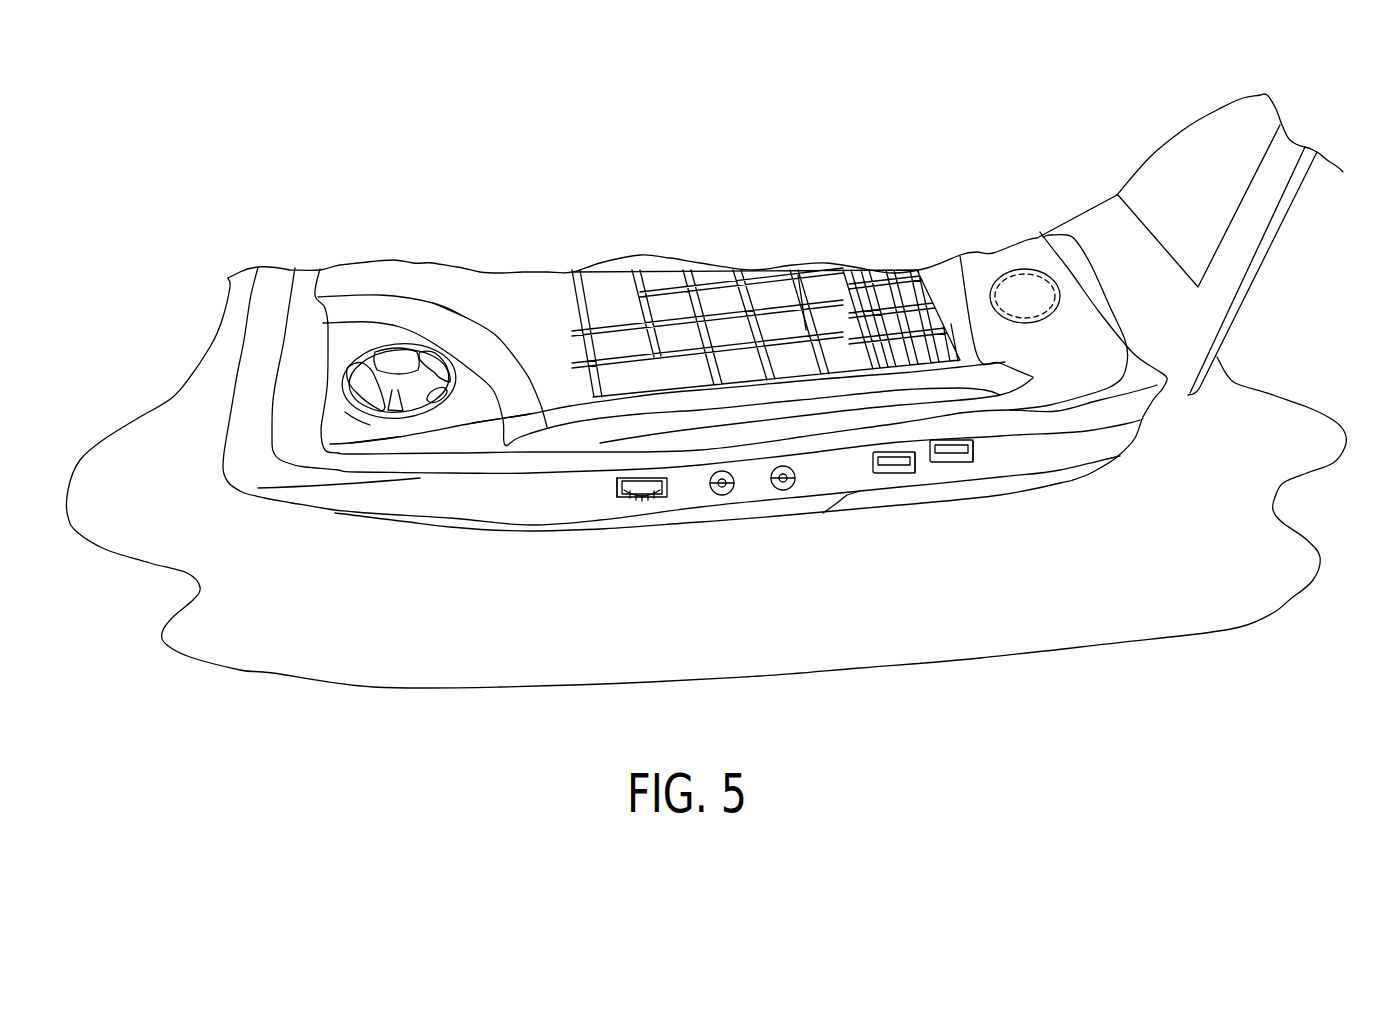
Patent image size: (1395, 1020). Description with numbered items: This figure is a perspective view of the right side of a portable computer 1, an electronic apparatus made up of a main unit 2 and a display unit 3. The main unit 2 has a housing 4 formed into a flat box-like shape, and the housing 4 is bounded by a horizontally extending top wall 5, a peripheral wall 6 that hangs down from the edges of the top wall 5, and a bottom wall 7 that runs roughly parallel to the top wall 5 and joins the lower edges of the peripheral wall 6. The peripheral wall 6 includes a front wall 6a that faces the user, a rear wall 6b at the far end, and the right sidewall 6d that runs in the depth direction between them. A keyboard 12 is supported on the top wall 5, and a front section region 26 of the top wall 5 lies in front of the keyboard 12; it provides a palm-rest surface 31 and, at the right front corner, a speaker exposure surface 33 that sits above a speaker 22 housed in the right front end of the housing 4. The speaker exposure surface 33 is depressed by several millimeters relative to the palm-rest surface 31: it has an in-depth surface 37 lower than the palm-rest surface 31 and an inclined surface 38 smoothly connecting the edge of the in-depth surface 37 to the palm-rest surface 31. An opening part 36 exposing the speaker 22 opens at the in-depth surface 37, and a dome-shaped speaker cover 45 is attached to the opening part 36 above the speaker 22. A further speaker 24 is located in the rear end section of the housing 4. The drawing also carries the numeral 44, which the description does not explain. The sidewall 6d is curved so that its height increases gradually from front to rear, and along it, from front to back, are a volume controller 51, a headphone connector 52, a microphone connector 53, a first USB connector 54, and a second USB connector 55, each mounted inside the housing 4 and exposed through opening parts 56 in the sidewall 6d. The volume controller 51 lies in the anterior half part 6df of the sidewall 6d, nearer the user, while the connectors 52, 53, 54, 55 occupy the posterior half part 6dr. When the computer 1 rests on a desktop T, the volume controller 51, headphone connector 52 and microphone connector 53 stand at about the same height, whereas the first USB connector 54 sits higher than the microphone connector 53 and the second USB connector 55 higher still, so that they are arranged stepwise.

The portable computer 1 is at (598, 170).
The main unit 2 is at (753, 264).
The display unit 3 is at (1148, 155).
The housing 4 is at (503, 305).
The top wall 5 is at (457, 278).
The peripheral wall 6 is at (685, 413).
The front wall 6a is at (243, 330).
The rear wall 6b is at (1142, 435).
The right sidewall 6d is at (754, 500).
The anterior half part 6df is at (573, 512).
The posterior half part 6dr is at (838, 485).
The bottom wall 7 is at (1068, 484).
The keyboard 12 is at (822, 292).
The speaker 22 is at (397, 353).
The speaker 24 is at (1015, 270).
The front section region 26 is at (417, 268).
The palm-rest surface 31 is at (528, 278).
The speaker exposure surface 33 is at (398, 432).
The opening part 36 is at (349, 405).
The in-depth surface 37 is at (473, 413).
The inclined surface 38 is at (333, 307).
The outer curved edge 44 is at (503, 337).
The speaker cover 45 is at (452, 380).
The volume controller 51 is at (658, 498).
The headphone connector 52 is at (727, 496).
The microphone connector 53 is at (783, 492).
The first USB connector 54 is at (894, 472).
The second USB connector 55 is at (960, 462).
The opening parts 56 is at (975, 443).
The desktop T is at (878, 668).